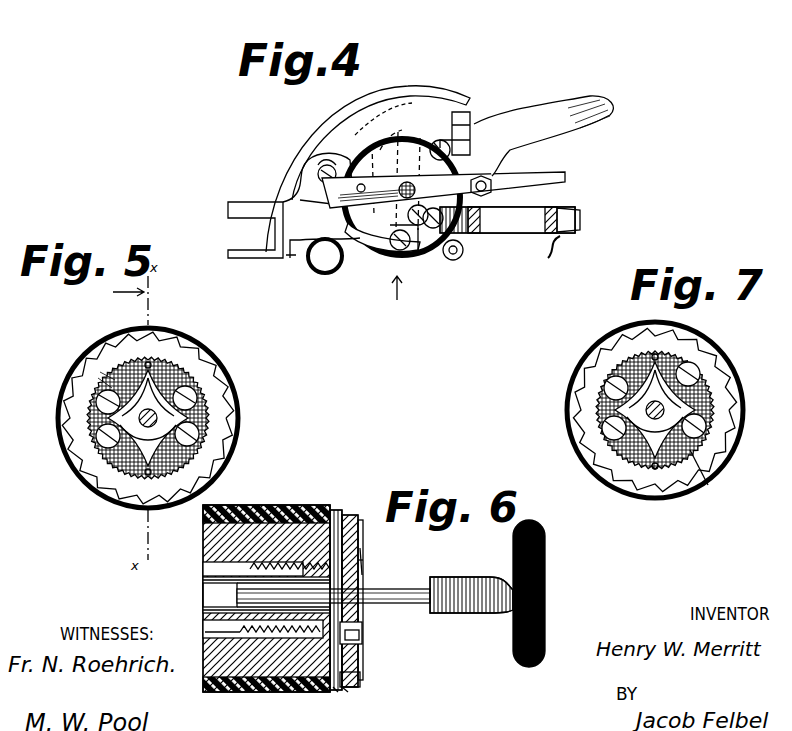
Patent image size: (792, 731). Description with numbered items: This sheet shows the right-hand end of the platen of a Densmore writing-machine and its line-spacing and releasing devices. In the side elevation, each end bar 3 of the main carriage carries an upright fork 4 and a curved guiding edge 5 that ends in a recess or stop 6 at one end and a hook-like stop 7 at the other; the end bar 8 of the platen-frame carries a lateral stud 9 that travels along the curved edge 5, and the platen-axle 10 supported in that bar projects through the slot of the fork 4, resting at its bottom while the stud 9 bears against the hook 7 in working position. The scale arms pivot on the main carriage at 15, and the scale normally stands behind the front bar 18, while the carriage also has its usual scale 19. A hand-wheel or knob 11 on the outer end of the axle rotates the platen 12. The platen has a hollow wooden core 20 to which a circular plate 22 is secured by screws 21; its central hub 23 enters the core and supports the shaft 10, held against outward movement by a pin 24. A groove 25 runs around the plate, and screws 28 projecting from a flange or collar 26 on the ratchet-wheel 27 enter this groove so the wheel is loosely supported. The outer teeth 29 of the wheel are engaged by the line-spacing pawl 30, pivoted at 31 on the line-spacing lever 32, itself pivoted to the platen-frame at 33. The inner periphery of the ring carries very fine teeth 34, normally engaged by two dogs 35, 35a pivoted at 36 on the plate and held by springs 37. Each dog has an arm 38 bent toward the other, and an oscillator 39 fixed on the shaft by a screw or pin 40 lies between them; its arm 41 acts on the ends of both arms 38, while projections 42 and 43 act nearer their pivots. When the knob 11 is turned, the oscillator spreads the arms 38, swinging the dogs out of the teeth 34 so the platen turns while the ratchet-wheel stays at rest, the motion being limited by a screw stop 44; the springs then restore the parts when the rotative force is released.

In FIG. 4, the end bar of the main carriage 3 is at (402, 197).
In FIG. 4, the fork or upright slotted member 4 is at (382, 138).
In FIG. 4, the curved guiding portion or edge 5 is at (378, 232).
In FIG. 4, the recess or stop 6 is at (408, 218).
In FIG. 4, the hook-like stop device 7 is at (318, 162).
In FIG. 4, the end bar of the platen-frame 8 is at (443, 190).
In FIG. 4, the lateral stud 9 is at (318, 174).
In FIG. 6, the platen-axle 10 is at (400, 598).
In FIG. 6, the hand-wheel or knob 11 is at (546, 615).
In FIG. 6, the cylindrical platen or roller 12 is at (246, 693).
In FIG. 4, the pivot of the scale-arms 15 is at (435, 258).
In FIG. 4, the front bar of the main carriage 18 is at (505, 233).
In FIG. 4, the carriage scale 19 is at (580, 222).
In FIG. 6, the hollow wooden core 20 is at (205, 543).
In FIG. 6, the screws 21 is at (245, 622).
In FIG. 6, the circular plate 22 is at (362, 628).
In FIG. 6, the hub 23 is at (236, 581).
In FIG. 6, the pin 24 is at (262, 590).
In FIG. 6, the groove 25 is at (346, 688).
In FIG. 6, the flange or collar 26 is at (336, 692).
In FIG. 6, the ratchet-wheel 27 is at (352, 515).
In FIG. 6, the screws 28 is at (335, 510).
In FIG. 7, the teeth 29 is at (582, 466).
In FIG. 6, the teeth 29 is at (362, 683).
In FIG. 4, the line-spacing pawl 30 is at (466, 128).
In FIG. 4, the pawl pivot 31 is at (437, 145).
In FIG. 4, the line-spacing lever 32 is at (546, 128).
In FIG. 4, the lever pivot 33 is at (502, 124).
In FIG. 5, the fine teeth or corrugations 34 is at (198, 422).
In FIG. 7, the fine teeth or corrugations 34 is at (600, 420).
In FIG. 6, the fine teeth or corrugations 34 is at (360, 545).
In FIG. 5, the dog 35 is at (98, 490).
In FIG. 7, the dog 35 is at (612, 482).
In FIG. 5, the dog 35a is at (226, 466).
In FIG. 7, the dog 35a is at (712, 481).
In FIG. 6, the dog 35a is at (360, 645).
In FIG. 5, the dog pivot 36 is at (104, 440).
In FIG. 7, the dog pivot 36 is at (706, 424).
In FIG. 5, the spring 37 is at (148, 476).
In FIG. 5, the extension or arm 38 is at (104, 390).
In FIG. 5, the oscillator 39 is at (147, 407).
In FIG. 7, the oscillator 39 is at (655, 400).
In FIG. 5, the screw or pin 40 is at (196, 402).
In FIG. 5, the arm of the oscillator 41 is at (152, 368).
In FIG. 7, the arm of the oscillator 41 is at (664, 352).
In FIG. 6, the arm of the oscillator 41 is at (362, 553).
In FIG. 7, the projection 42 is at (600, 412).
In FIG. 7, the projection 43 is at (700, 392).
In FIG. 7, the stop 44 is at (604, 392).